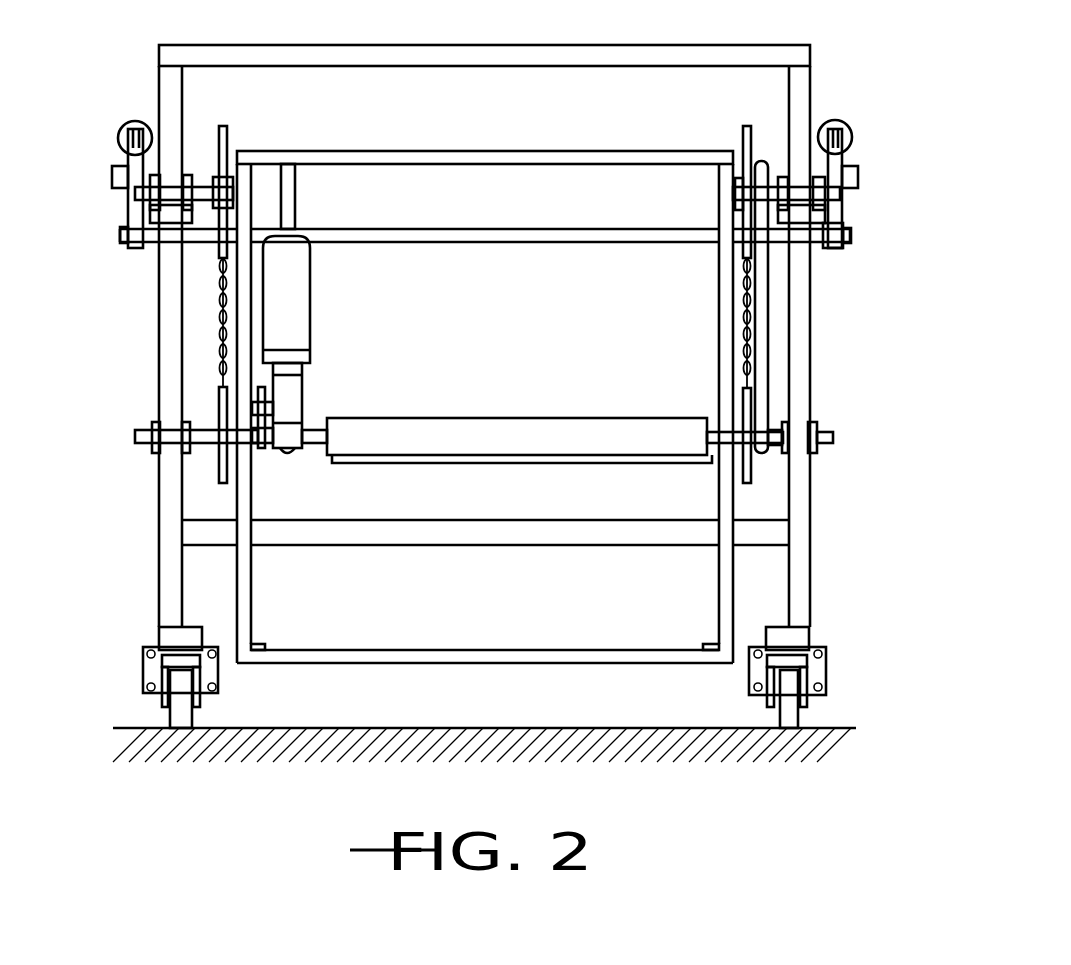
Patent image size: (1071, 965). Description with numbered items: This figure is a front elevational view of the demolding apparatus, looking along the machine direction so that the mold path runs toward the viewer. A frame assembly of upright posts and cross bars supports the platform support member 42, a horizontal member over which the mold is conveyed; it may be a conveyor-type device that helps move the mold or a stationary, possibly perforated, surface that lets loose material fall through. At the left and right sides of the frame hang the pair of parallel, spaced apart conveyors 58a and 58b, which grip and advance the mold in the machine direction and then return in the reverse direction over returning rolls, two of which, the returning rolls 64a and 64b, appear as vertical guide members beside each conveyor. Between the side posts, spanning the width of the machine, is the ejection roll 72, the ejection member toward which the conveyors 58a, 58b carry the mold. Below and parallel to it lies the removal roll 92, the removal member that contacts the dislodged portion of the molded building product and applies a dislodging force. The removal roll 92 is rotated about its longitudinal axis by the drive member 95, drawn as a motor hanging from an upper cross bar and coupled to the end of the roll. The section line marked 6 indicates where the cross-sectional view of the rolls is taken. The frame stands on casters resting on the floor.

The platform support member 42 is at (198, 520).
The conveyor 58a is at (219, 320).
The conveyor 58b is at (750, 303).
The returning roll 64a is at (219, 126).
The returning roll 64b is at (745, 126).
The ejection roll 72 is at (403, 463).
The removal roll 92 is at (460, 463).
The drive member 95 is at (312, 307).
The section line 6- 6 is at (620, 408).